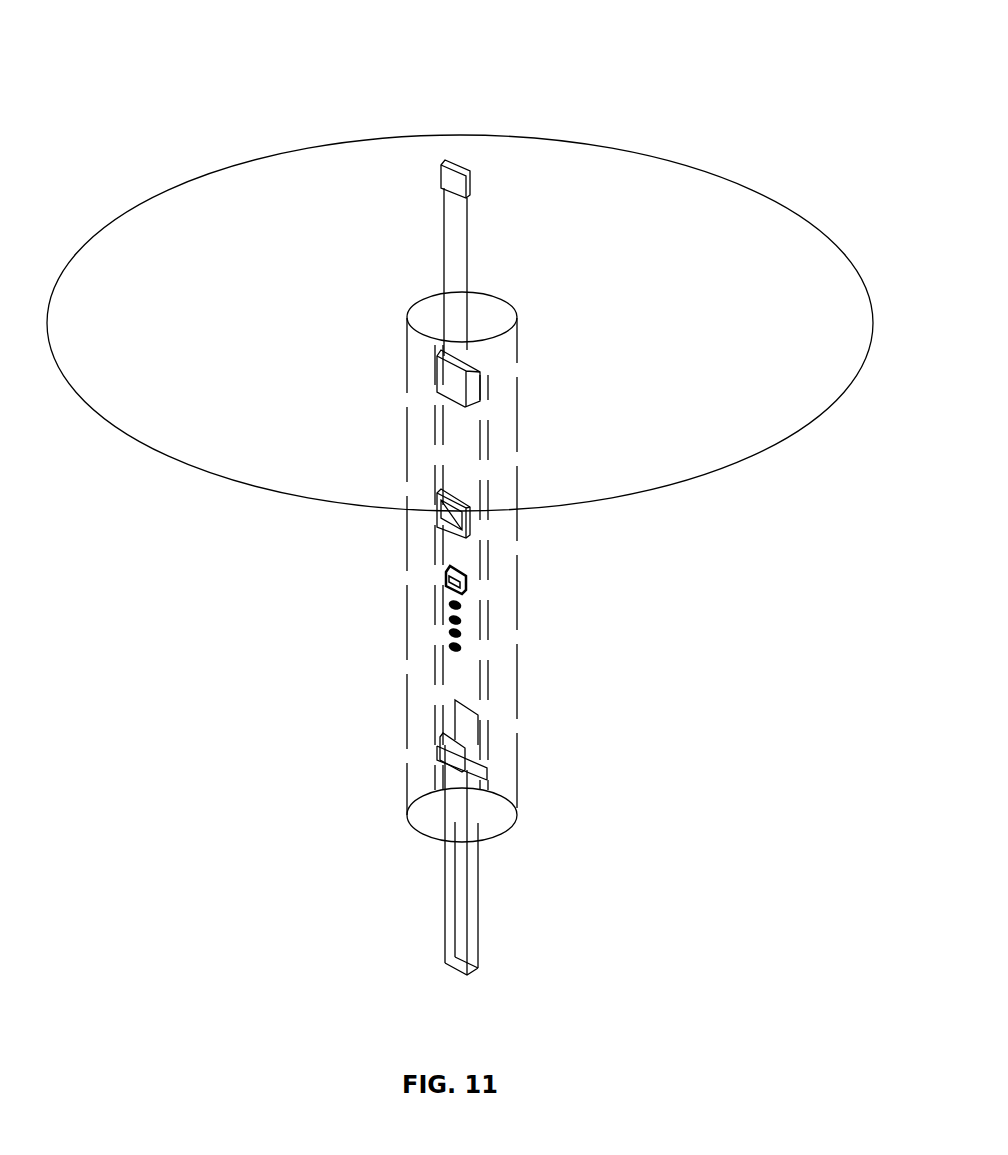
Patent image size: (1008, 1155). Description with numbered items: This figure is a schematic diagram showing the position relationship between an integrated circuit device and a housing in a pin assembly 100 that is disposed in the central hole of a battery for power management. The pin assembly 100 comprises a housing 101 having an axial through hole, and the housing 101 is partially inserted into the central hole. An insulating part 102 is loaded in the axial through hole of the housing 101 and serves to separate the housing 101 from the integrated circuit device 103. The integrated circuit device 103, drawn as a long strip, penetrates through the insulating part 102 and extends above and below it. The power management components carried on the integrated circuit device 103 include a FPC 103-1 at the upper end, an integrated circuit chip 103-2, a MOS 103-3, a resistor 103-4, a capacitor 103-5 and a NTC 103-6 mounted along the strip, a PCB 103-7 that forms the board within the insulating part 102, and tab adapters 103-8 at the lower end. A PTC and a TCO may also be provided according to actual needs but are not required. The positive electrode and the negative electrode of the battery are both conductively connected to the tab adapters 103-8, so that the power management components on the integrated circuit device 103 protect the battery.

The pin assembly 100 is at (490, 86).
The housing 101 is at (705, 240).
The insulating part 102 is at (502, 605).
The integrated circuit device 103 is at (482, 224).
The FPC 103-1 is at (460, 258).
The integrated circuit (IC) chip 103-2 is at (452, 499).
The MOS 103-3 is at (447, 578).
The resistor 103-4 is at (450, 605).
The capacitor 103-5 is at (450, 628).
The NTC 103-6 is at (450, 645).
The PCB 103-7 is at (462, 452).
The tab adapters 103-8 is at (465, 863).